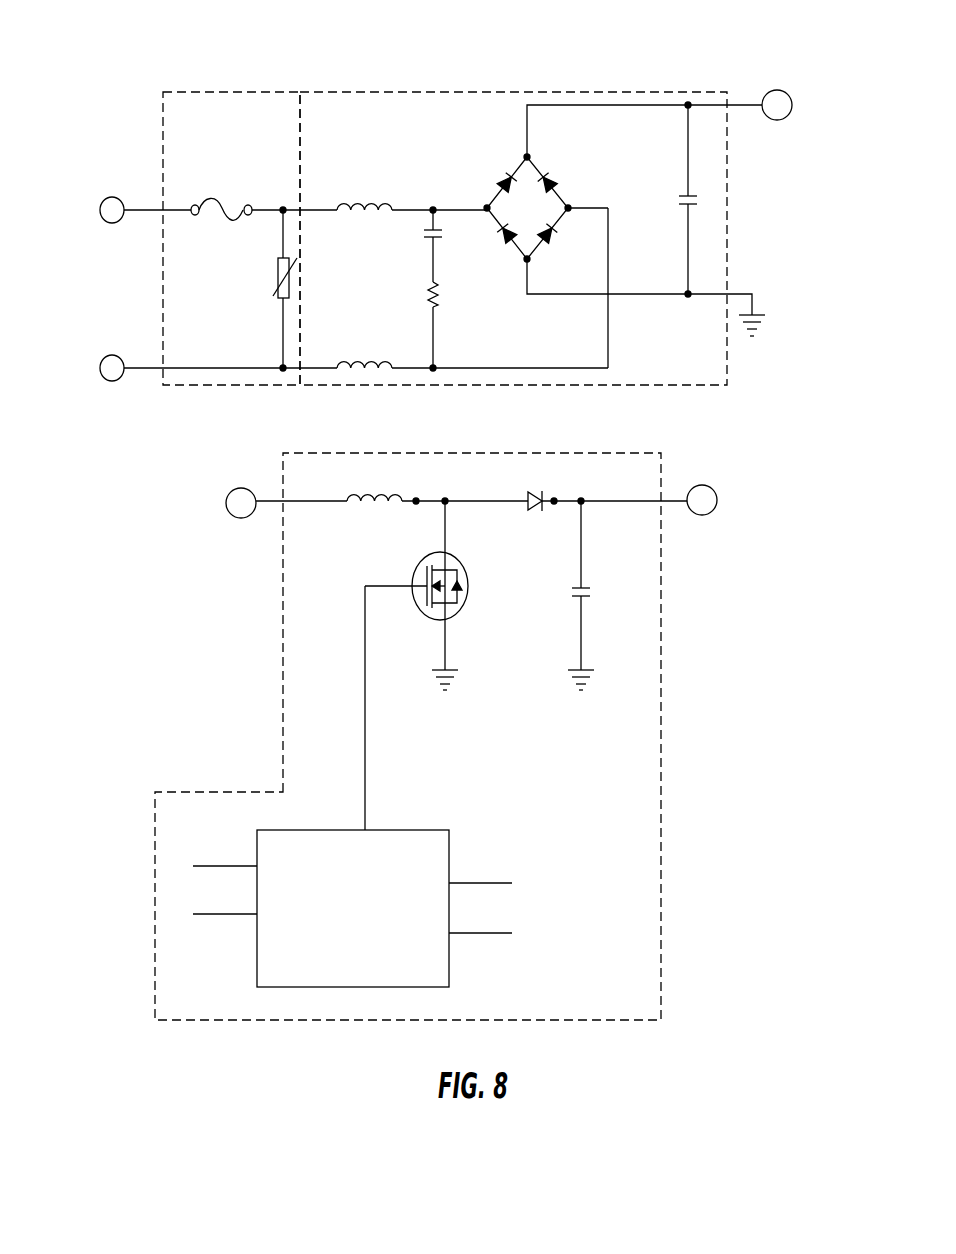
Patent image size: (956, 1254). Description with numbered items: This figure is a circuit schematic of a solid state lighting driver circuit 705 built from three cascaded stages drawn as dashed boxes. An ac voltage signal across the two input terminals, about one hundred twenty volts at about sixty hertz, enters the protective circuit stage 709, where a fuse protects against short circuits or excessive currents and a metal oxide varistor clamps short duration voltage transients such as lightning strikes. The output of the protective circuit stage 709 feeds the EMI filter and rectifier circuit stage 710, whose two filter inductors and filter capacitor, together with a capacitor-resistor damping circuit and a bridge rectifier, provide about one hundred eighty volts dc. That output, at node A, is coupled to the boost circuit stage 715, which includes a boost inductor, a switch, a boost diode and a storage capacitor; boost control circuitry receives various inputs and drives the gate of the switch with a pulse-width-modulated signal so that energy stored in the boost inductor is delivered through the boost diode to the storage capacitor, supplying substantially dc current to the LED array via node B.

The solid state lighting driver circuit 705 is at (672, 33).
The protective circuit stage 709 is at (257, 92).
The EMI filter and rectifier circuit stage 710 is at (502, 91).
The boost circuit stage 715 is at (610, 452).